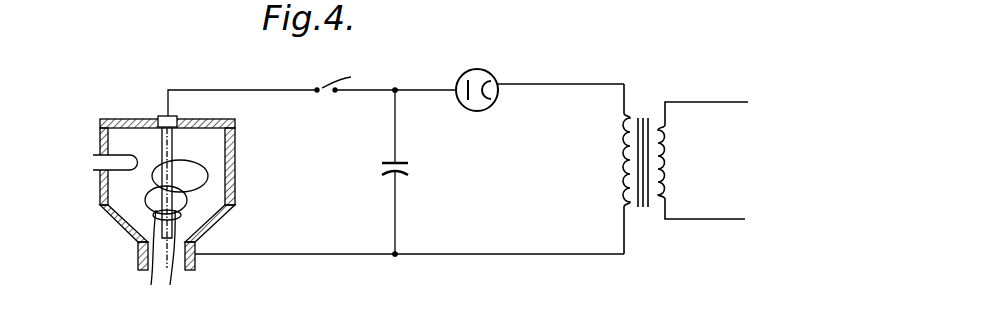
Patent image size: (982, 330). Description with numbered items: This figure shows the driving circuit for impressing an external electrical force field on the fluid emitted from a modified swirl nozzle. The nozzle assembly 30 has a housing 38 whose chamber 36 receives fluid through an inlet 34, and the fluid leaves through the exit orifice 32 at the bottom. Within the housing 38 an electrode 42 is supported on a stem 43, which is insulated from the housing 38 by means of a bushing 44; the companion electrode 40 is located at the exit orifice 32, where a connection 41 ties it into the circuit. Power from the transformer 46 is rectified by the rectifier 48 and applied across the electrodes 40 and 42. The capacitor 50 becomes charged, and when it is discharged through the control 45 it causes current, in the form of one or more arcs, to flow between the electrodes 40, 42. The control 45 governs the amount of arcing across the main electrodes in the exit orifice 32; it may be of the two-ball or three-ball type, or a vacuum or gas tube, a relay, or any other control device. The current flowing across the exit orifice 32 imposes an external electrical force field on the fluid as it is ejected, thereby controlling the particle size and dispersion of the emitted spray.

The spark chamber housing 30 is at (103, 223).
The exit orifice 32 is at (152, 270).
The air inlet tube 34 is at (100, 163).
The combustion chamber 36 is at (190, 151).
The housing 38 is at (236, 175).
The electrode 40 is at (196, 262).
The nozzle ground connection 41 is at (196, 244).
The electrode 42 is at (170, 268).
The stem 43 is at (172, 143).
The bushing 44 is at (160, 117).
The control 45 is at (385, 76).
The transformer 46 is at (620, 156).
The rectifier 48 is at (488, 71).
The capacitor 50 is at (408, 168).